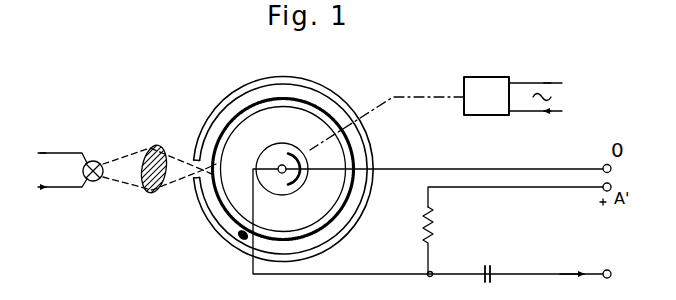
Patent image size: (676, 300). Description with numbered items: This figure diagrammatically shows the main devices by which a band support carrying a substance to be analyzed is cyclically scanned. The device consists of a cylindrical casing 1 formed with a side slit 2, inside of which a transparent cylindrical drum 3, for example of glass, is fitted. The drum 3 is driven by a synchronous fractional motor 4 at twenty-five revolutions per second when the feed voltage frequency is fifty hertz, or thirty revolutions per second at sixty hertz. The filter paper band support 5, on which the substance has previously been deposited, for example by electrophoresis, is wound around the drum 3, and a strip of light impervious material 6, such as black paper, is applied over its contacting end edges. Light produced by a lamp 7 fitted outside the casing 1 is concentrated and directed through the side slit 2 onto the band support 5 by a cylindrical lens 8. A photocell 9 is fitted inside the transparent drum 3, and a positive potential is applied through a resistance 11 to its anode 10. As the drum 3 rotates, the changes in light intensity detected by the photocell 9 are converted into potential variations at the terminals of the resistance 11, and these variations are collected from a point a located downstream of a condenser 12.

The cylindrical casing 1 is at (212, 223).
The side slit 2 is at (195, 177).
The transparent cylindrical drum 3 is at (226, 128).
The synchronous fractional motor 4 is at (485, 77).
The filter paper band support 5 is at (222, 122).
The strip of light impervious material 6 is at (240, 238).
The light source (lamp) 7 is at (100, 183).
The cylindrical lens 8 is at (147, 147).
The photocell 9 is at (298, 182).
The anode 10 is at (280, 175).
The resistance 11 is at (433, 222).
The condenser 12 is at (484, 268).
The point a is at (551, 273).